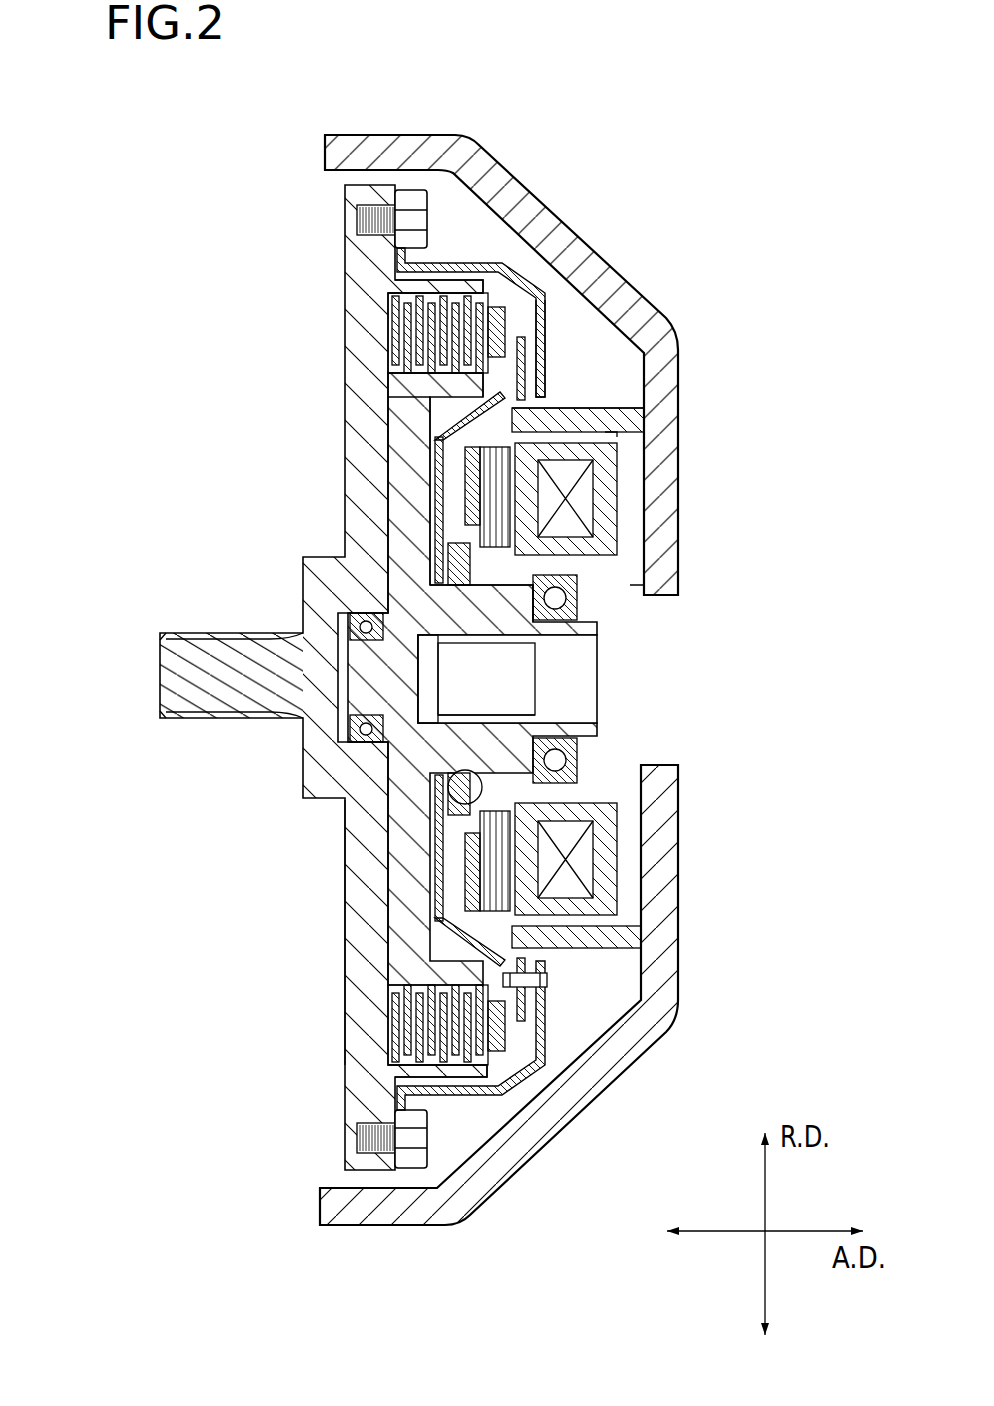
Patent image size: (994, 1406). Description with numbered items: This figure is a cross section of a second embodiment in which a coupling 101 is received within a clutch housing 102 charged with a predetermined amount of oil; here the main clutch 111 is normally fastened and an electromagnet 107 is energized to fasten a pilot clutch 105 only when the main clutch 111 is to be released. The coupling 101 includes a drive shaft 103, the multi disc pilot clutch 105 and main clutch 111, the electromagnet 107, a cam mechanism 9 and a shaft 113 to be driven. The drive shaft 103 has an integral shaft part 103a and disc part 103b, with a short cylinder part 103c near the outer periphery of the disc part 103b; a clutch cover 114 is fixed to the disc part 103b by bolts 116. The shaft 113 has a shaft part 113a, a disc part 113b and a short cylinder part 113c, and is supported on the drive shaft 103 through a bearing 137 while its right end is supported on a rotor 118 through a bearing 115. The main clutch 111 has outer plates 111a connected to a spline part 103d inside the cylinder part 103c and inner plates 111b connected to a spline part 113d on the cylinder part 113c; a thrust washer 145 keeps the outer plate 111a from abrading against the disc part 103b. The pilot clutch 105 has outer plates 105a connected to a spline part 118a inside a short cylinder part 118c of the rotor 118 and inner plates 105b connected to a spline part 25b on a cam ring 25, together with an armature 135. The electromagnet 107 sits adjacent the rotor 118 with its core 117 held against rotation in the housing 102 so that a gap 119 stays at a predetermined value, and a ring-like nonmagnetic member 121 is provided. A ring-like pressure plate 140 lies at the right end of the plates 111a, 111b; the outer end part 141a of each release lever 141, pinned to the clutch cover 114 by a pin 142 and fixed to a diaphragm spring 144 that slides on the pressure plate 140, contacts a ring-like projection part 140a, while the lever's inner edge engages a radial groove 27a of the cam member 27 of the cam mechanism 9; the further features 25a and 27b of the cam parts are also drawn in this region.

The coupling 101 is at (228, 185).
The clutch housing 102 is at (500, 182).
The drive shaft 103 is at (389, 700).
The shaft part 103a is at (210, 720).
The disc part 103b is at (367, 1020).
The short cylinder part 103c is at (393, 1073).
The spline part 103d is at (390, 284).
The pilot clutch 105 is at (546, 995).
The outer plates 105a is at (640, 955).
The inner plates 105b is at (640, 827).
The electromagnet 107 is at (502, 895).
The cam mechanism 9 is at (472, 757).
The cam ring 25 is at (528, 600).
The support block 25a is at (515, 828).
The spline part 25b is at (437, 540).
The cam member 27 is at (421, 743).
The radial groove 27a is at (442, 762).
The ball 27b is at (466, 835).
The main clutch 111 is at (258, 679).
The outer plates 111a is at (388, 313).
The inner plates 111b is at (388, 367).
The shaft to be driven 113 is at (393, 679).
The shaft part 113a is at (420, 605).
The disc part 113b is at (397, 482).
The short cylinder part 113c is at (412, 420).
The spline part 113d is at (428, 392).
The clutch cover 114 is at (517, 1060).
The bearing 115 is at (577, 600).
The bolts 116 is at (427, 1135).
The core 117 is at (502, 896).
The rotor 118 is at (603, 535).
The spline part 118a is at (497, 930).
The short cylinder part 118c is at (605, 408).
The gap 119 is at (630, 433).
The ring-like nonmagnetic member 121 is at (595, 835).
The armature 135 is at (523, 893).
The bearing 137 is at (358, 738).
The pressure plate 140 is at (548, 279).
The ring-like projection part 140a is at (540, 297).
The release lever 141 is at (644, 366).
The outer end part 141a is at (640, 345).
The pin 142 is at (637, 1030).
The diaphragm spring 144 is at (545, 1030).
The thrust washer 145 is at (390, 340).